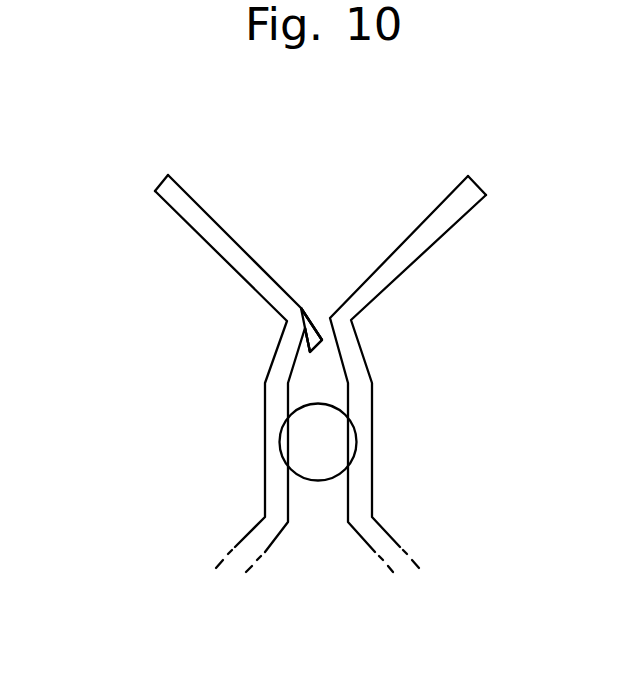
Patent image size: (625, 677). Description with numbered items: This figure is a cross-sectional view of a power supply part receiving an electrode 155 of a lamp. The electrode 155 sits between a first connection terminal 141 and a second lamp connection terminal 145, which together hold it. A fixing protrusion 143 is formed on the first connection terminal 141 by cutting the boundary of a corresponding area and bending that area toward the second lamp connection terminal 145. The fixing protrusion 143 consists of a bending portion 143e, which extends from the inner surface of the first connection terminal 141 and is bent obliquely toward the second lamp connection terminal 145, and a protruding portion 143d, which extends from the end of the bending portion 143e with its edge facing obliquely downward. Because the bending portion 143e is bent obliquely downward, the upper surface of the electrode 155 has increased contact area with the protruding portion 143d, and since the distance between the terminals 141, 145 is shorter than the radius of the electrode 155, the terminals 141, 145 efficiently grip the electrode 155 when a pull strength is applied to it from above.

The first connection terminal 141 is at (200, 222).
The second lamp connection terminal 145 is at (437, 220).
The fixing protrusion 143 is at (306, 330).
The protruding portion 143d is at (316, 330).
The bending portion 143e is at (306, 330).
The electrode 155 is at (297, 442).